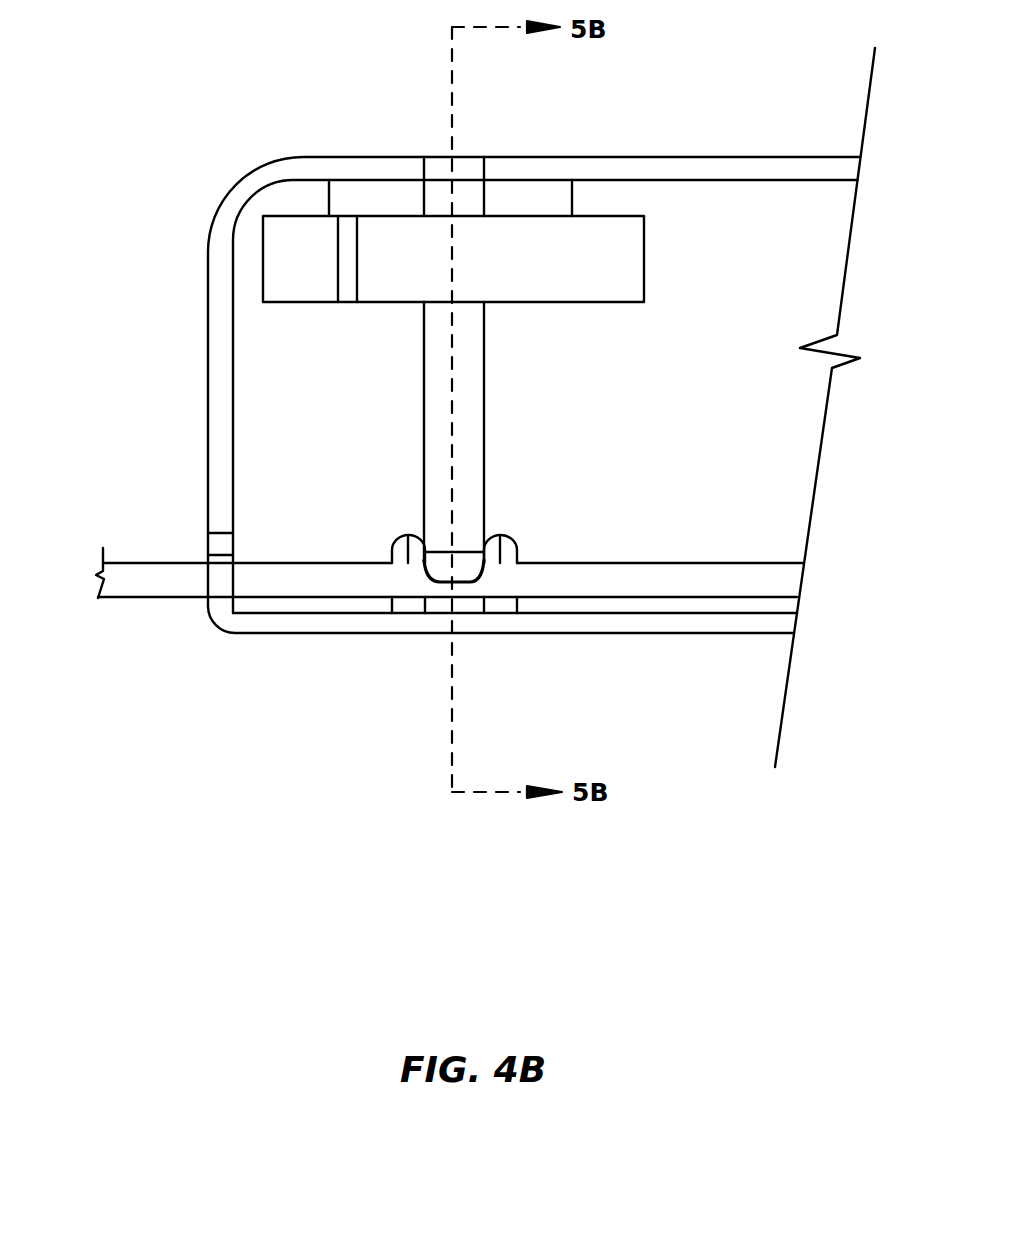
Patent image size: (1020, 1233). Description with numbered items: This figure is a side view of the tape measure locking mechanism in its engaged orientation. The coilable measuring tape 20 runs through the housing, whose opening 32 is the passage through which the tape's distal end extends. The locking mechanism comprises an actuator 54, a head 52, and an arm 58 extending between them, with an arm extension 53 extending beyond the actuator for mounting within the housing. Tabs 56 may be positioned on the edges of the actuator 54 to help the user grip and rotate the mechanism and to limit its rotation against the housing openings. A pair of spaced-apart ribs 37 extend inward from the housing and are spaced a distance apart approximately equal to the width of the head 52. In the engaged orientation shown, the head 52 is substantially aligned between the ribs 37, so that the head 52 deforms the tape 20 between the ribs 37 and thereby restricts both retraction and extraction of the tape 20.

The coilable measuring tape 20 is at (155, 580).
The opening 32 is at (208, 615).
The ribs 37 is at (400, 605).
The head 52 is at (447, 563).
The arm extension 53 is at (438, 170).
The actuator 54 is at (298, 271).
The tabs 56 is at (347, 243).
The arm 58 is at (445, 405).